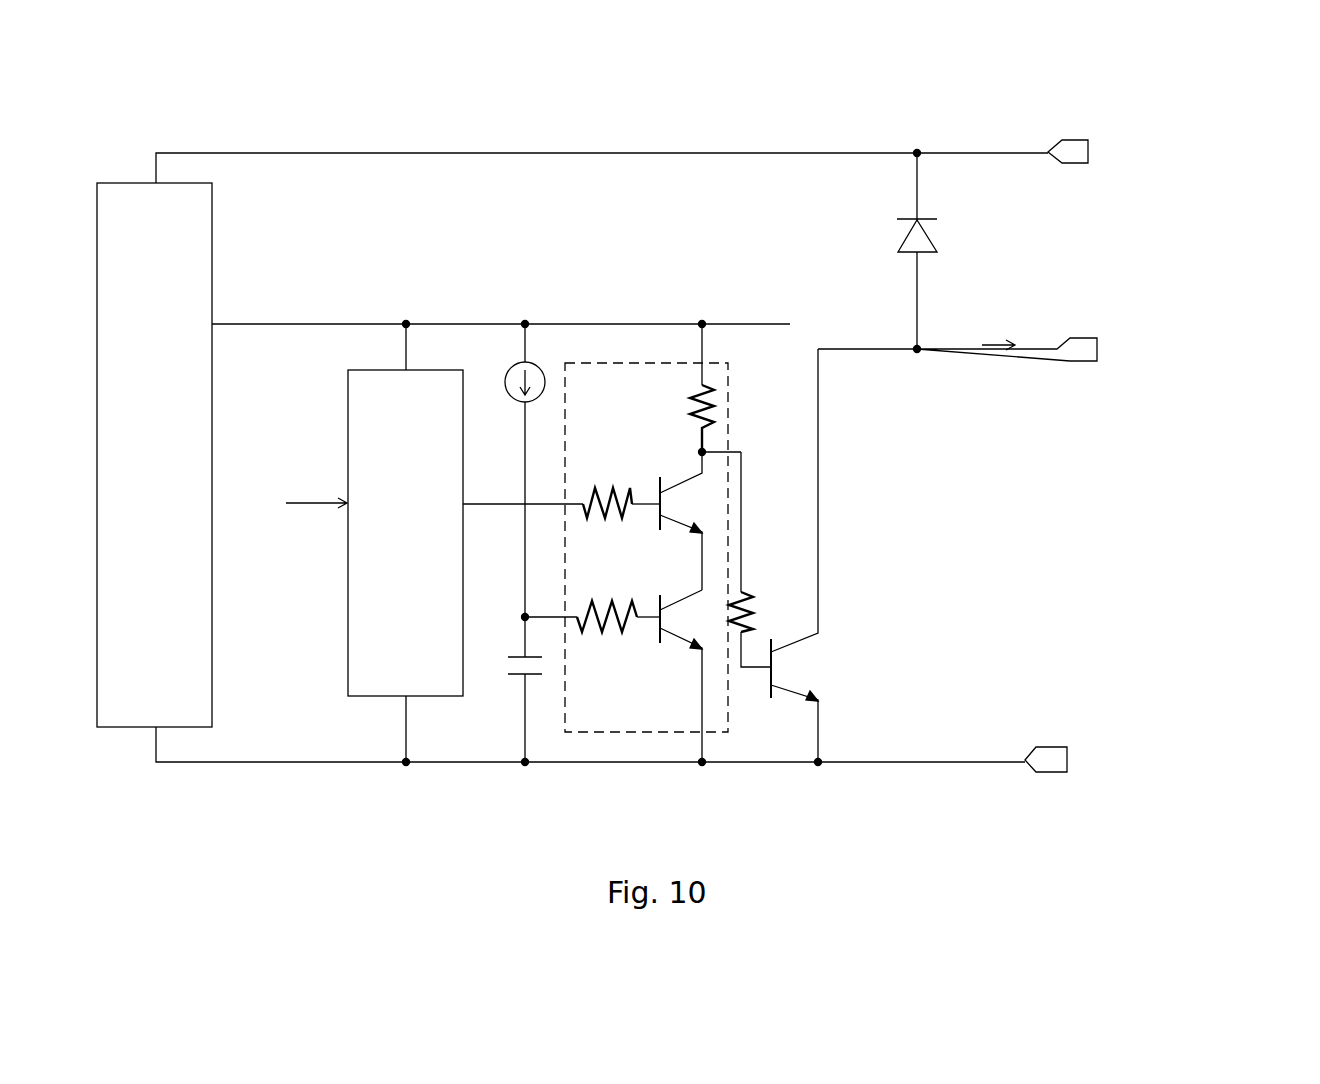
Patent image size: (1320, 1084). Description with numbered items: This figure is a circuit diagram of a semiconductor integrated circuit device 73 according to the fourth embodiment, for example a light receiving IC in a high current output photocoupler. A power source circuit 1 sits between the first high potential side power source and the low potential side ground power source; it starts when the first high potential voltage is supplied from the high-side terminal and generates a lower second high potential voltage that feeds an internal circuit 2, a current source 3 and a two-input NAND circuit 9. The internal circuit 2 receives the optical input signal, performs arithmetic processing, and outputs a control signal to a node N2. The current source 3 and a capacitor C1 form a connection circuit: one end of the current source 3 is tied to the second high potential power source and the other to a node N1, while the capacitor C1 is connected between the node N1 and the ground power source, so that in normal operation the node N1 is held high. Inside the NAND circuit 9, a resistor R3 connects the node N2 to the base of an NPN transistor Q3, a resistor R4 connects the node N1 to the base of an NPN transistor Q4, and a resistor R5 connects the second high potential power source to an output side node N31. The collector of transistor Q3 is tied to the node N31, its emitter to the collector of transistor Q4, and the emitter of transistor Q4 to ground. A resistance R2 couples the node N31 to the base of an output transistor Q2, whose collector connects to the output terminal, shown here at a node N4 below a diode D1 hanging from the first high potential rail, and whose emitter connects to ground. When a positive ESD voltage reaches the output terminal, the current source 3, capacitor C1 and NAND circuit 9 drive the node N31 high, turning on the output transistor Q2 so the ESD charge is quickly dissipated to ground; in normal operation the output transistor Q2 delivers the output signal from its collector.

The semiconductor integrated circuit device 73 is at (1204, 218).
The power source circuit 1 is at (212, 243).
The internal circuit 2 is at (348, 630).
The current source 3 is at (509, 390).
The 2-input NAND circuit 9 is at (712, 373).
The resistor R5 is at (692, 396).
The resistor R3 is at (632, 462).
The resistor R4 is at (627, 574).
The resistance R2 is at (755, 616).
The NPN transistor Q3 is at (678, 505).
The NPN transistor Q4 is at (678, 650).
The output transistor Q2 is at (805, 668).
The capacitor C1 is at (510, 668).
The diode D1 is at (943, 237).
The node N1 is at (531, 608).
The node N2 is at (523, 490).
The output side node N31 is at (698, 453).
The node N4 is at (869, 339).